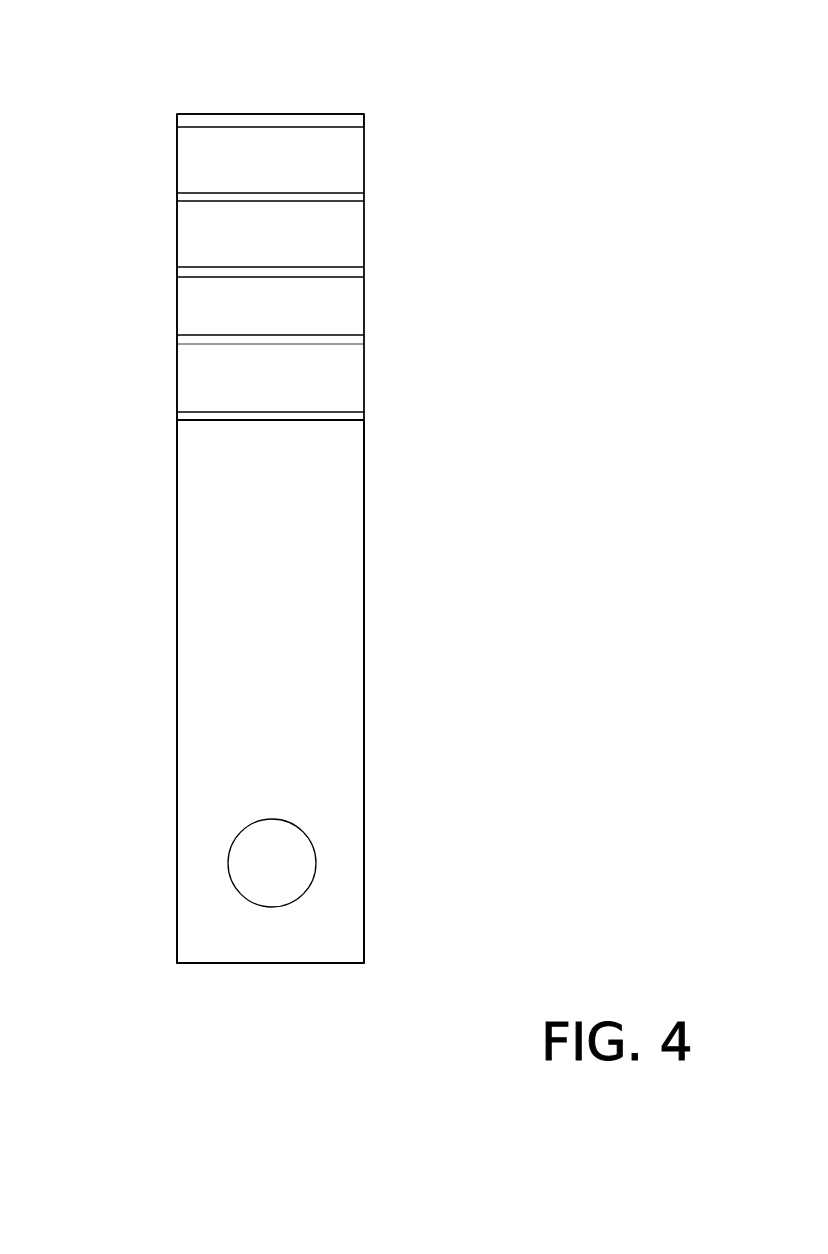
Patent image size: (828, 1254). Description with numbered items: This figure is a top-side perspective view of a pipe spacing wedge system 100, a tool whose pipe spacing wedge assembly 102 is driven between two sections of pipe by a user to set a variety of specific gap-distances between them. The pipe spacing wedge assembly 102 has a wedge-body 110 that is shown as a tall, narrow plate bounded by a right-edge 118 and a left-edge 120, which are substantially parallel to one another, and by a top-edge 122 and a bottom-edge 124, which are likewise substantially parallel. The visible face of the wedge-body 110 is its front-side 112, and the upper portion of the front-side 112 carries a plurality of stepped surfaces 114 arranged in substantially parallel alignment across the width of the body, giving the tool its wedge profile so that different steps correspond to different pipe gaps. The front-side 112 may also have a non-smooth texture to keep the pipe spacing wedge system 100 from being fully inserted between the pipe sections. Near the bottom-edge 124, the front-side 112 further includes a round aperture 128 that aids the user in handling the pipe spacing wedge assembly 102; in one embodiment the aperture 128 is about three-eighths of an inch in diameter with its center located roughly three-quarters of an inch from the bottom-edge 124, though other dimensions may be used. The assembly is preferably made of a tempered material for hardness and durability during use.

The pipe spacing wedge system 100 is at (428, 96).
The pipe spacing wedge assembly 102 is at (465, 127).
The wedge-body 110 is at (503, 165).
The front-side 112 is at (284, 569).
The plurality of stepped surfaces 114 is at (132, 345).
The right-edge 118 is at (365, 635).
The left-edge 120 is at (177, 653).
The top-edge 122 is at (257, 126).
The bottom-edge 124 is at (295, 963).
The aperture 128 is at (313, 840).